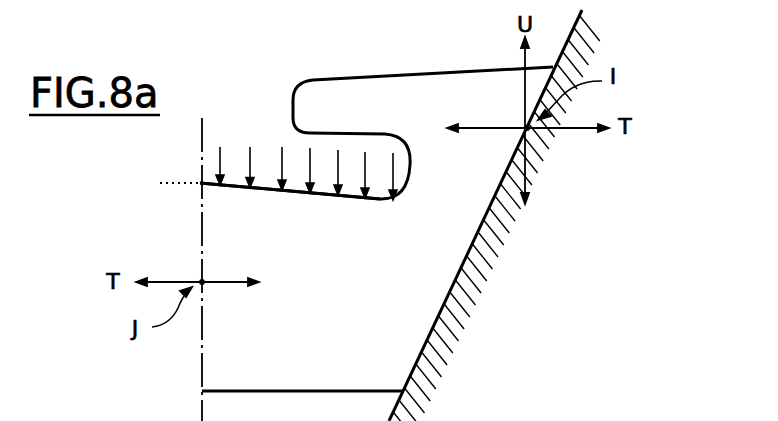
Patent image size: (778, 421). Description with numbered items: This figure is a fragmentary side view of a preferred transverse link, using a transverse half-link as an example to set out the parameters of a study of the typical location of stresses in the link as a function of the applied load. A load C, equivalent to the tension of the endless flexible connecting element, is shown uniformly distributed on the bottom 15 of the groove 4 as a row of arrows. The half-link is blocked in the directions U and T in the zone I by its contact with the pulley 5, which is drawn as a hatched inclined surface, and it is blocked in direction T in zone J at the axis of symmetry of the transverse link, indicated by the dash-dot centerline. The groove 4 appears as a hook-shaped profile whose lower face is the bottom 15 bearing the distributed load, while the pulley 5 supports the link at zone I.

The groove 4 is at (288, 138).
The pulley 5 is at (593, 41).
The bottom of the groove 15 is at (307, 193).